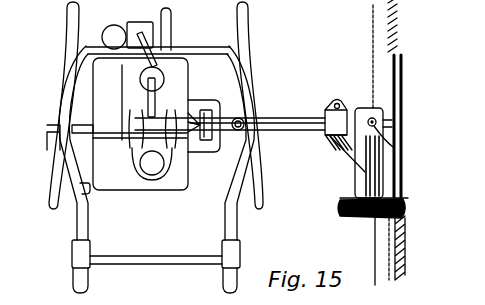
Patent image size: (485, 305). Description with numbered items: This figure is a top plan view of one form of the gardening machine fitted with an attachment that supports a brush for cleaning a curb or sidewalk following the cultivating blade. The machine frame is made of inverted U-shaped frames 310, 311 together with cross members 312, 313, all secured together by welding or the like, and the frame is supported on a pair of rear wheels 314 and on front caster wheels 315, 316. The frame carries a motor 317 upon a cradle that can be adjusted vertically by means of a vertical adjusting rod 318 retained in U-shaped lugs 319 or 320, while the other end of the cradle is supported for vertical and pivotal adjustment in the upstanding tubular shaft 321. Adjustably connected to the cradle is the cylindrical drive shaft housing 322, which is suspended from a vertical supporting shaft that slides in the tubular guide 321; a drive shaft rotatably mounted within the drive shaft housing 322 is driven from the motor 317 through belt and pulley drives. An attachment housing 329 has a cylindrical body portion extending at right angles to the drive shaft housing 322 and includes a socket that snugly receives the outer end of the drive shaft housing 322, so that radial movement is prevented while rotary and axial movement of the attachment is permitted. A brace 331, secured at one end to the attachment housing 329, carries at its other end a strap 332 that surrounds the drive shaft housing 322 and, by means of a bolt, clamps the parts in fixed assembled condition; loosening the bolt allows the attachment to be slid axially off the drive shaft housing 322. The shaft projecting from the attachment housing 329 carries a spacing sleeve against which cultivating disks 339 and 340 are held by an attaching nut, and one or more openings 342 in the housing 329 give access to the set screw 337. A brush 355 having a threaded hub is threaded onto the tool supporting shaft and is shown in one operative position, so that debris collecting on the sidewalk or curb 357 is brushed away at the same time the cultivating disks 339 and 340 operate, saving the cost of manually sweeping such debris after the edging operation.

The inverted U-shaped frame 310 is at (235, 205).
The inverted U-shaped frame 311 is at (82, 222).
The cross member 312 is at (157, 257).
The cross member 313 is at (188, 45).
The rear wheel 314 is at (68, 18).
The front caster wheel 315 is at (192, 299).
The front caster wheel 316 is at (87, 280).
The motor 317 is at (177, 86).
The vertical adjusting rod 318 is at (80, 117).
The U-shaped lug 319 is at (72, 124).
The U-shaped lug 320 is at (80, 185).
The upstanding tubular shaft 321 is at (244, 119).
The cylindrical drive shaft housing 322 is at (287, 118).
The attachment housing 329 is at (363, 178).
The brace 331 is at (341, 147).
The strap 332 is at (328, 118).
The set screw 337 is at (403, 139).
The cultivating disk 339 is at (396, 50).
The cultivating disk 340 is at (402, 72).
The opening 342 is at (370, 119).
The brush 355 is at (358, 219).
The sidewalk or curb 357 is at (390, 244).